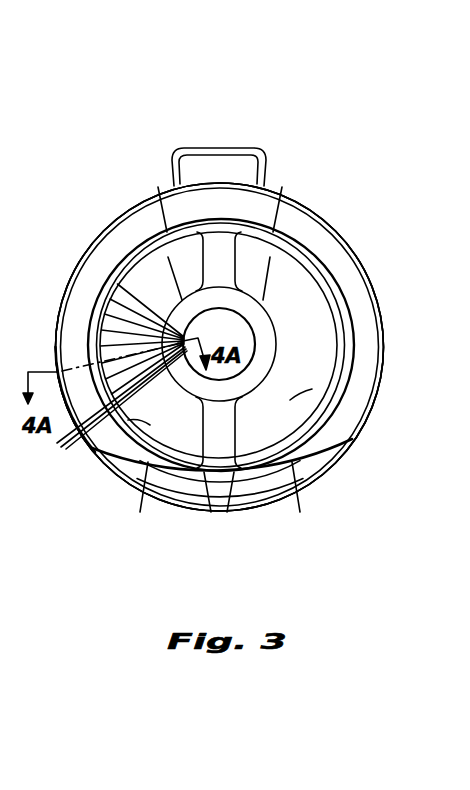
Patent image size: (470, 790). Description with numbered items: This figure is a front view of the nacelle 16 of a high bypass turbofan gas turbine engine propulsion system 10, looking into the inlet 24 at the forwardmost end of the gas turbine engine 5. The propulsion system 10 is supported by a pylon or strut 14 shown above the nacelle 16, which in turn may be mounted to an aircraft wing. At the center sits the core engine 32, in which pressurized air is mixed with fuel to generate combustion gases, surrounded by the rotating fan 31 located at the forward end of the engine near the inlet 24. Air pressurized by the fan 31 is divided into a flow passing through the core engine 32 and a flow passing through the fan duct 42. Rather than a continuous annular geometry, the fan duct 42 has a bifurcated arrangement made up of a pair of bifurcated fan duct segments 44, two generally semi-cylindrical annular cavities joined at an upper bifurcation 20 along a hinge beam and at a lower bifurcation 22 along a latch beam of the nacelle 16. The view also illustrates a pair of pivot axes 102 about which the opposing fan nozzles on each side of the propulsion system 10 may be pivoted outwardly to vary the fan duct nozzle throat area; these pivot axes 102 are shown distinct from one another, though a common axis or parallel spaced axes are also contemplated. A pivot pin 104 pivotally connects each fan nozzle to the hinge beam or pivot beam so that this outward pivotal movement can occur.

The gas turbine engine 5 is at (283, 72).
The gas turbine engine propulsion system 10 is at (220, 347).
The pylon or strut 14 is at (204, 147).
The nacelle 16 is at (369, 273).
The upper bifurcation 20 is at (203, 253).
The lower bifurcation 22 is at (152, 497).
The inlet 24 is at (311, 458).
The fan 31 is at (66, 451).
The core engine 32 is at (276, 345).
The fan duct 42 is at (310, 325).
The bifurcated fan duct segments 44 is at (298, 408).
The pivot axis 102 is at (158, 214).
The pivot pin 104 is at (158, 200).